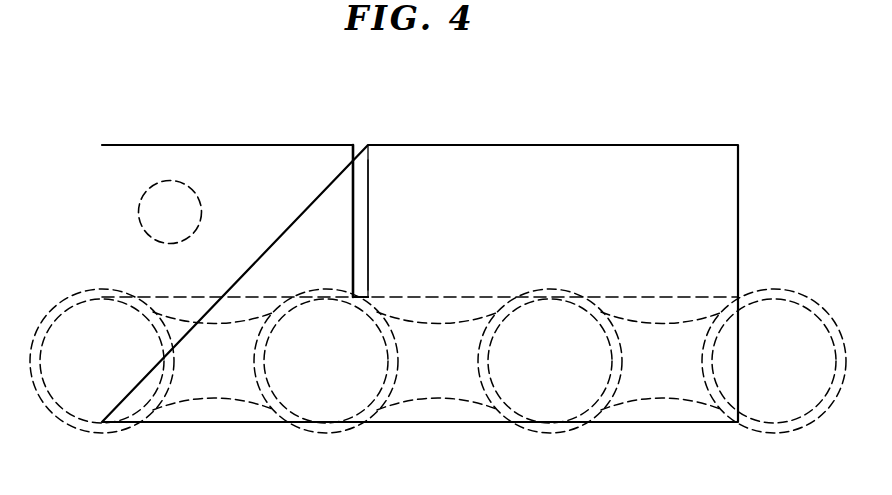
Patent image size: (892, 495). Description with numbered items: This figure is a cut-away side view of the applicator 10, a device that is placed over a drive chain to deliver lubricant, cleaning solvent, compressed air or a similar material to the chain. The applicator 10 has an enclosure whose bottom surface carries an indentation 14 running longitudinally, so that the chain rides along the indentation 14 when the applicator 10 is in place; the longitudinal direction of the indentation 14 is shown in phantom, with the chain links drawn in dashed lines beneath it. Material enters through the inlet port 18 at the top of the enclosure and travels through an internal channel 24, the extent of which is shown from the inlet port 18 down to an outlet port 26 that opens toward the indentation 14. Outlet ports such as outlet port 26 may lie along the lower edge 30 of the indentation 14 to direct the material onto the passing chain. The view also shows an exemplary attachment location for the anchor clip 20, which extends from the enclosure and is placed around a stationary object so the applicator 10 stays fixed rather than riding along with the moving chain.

The applicator 10 is at (722, 178).
The indentation 14 is at (690, 297).
The inlet port 18 is at (359, 145).
The anchor clip 20 is at (138, 211).
The internal channel 24 is at (360, 222).
The outlet port 26 is at (368, 297).
The lower edge 30 is at (148, 297).